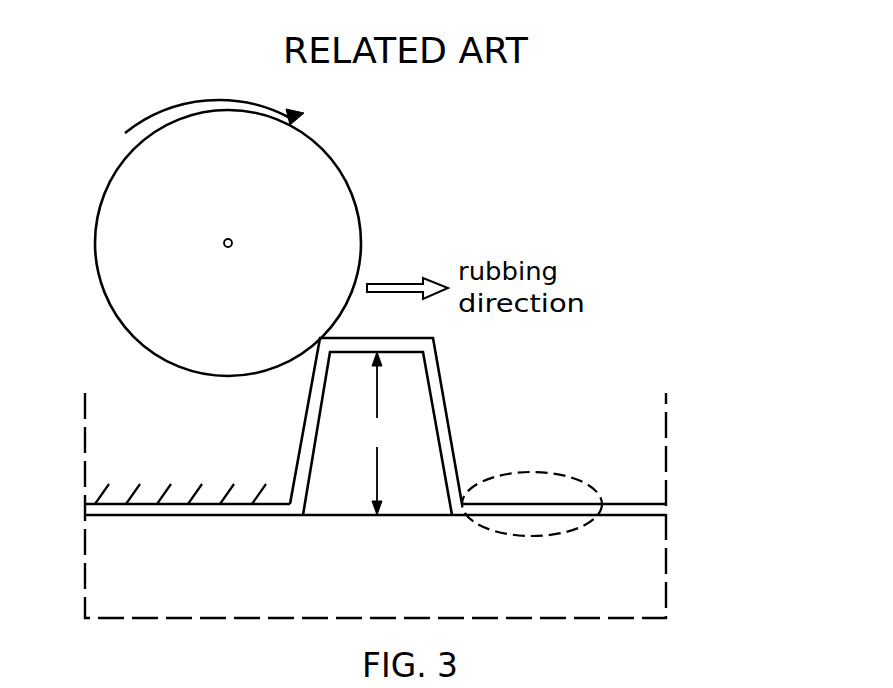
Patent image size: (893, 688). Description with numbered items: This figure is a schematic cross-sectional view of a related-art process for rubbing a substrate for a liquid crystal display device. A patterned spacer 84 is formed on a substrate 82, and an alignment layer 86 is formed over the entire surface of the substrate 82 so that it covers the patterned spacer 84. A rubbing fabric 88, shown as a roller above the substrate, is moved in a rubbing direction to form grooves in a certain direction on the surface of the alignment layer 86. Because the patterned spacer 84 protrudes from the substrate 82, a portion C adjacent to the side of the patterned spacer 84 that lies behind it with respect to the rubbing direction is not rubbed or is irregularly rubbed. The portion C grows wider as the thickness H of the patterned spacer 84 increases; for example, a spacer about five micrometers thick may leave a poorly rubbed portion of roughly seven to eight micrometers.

The substrate 82 is at (653, 572).
The patterned spacer 84 is at (321, 455).
The alignment layer 86 is at (311, 393).
The rubbing fabric 88 is at (353, 193).
The portion C is at (538, 472).
The thickness of the patterned spacer H is at (377, 433).